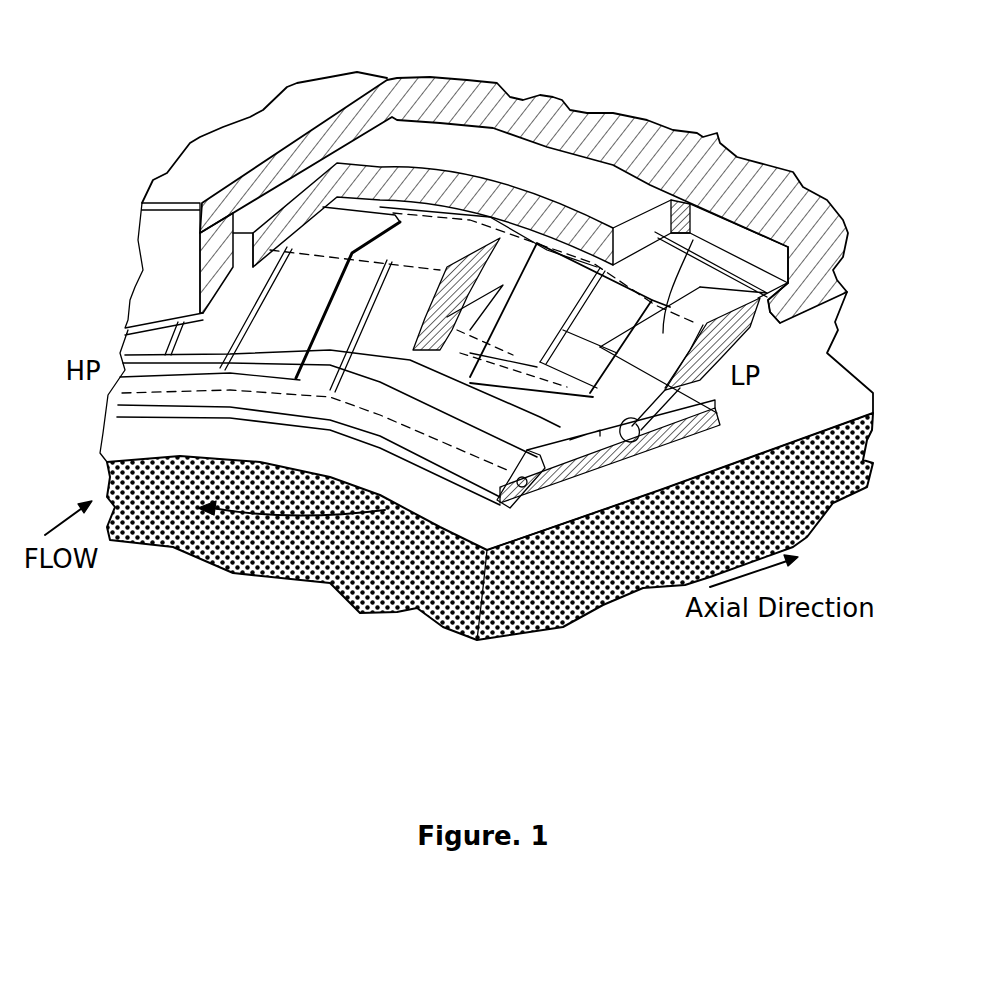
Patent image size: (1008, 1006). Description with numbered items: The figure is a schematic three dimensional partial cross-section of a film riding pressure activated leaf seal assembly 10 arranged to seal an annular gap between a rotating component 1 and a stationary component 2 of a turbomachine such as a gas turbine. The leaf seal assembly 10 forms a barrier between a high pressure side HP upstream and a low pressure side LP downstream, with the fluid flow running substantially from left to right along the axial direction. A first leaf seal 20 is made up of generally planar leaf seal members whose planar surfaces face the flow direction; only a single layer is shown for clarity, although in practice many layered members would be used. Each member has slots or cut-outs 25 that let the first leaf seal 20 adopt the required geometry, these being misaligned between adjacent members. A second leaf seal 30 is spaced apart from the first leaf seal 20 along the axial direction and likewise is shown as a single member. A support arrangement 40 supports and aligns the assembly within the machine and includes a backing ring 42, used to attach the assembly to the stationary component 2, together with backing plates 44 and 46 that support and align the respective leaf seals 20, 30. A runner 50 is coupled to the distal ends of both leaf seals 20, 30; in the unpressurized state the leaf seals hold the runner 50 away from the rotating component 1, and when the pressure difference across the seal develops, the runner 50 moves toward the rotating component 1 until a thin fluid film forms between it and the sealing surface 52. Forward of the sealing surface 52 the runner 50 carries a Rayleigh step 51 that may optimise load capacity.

The rotating component 1 is at (694, 537).
The stationary component 2 is at (619, 140).
The leaf seal assembly 10 is at (410, 72).
The first leaf seal 20 is at (298, 263).
The slots or cut-outs 25 is at (337, 350).
The second leaf seal 30 is at (763, 211).
The support arrangement 40 is at (430, 185).
The backing ring 42 is at (669, 218).
The backing plate 44 is at (466, 268).
The backing plate 46 is at (717, 358).
The runner 50 is at (574, 465).
The Rayleigh step 51 is at (528, 497).
The sealing surface 52 is at (688, 437).